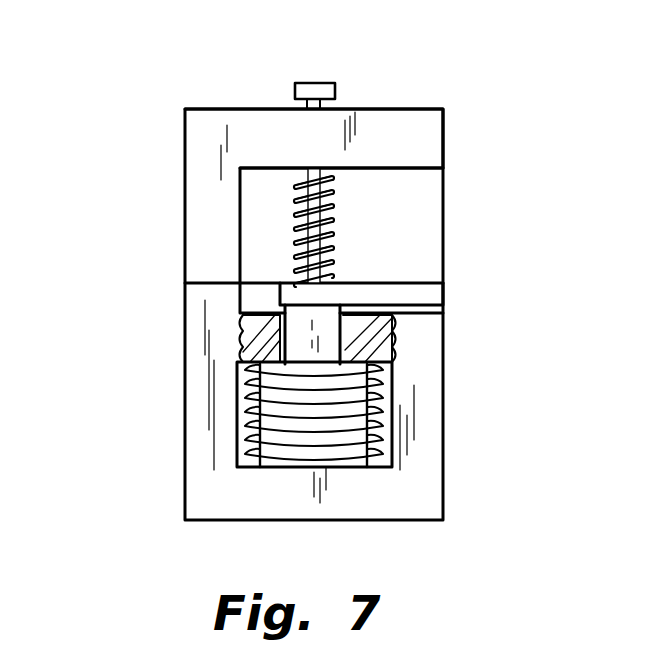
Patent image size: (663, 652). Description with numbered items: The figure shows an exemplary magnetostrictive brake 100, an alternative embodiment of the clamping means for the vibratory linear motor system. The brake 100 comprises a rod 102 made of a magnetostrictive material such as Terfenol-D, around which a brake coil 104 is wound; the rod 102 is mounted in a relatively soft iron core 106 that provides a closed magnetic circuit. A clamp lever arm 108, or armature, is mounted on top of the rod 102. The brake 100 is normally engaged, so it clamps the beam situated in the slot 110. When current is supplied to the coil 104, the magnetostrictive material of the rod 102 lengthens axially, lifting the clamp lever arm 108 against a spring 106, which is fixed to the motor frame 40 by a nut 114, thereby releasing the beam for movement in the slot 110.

The magnetostrictive brake 100 is at (164, 176).
The motor frame 40 is at (447, 141).
The nut 114 is at (337, 84).
The soft iron core 106 is at (183, 426).
The clamp lever arm 108 is at (444, 297).
The slot 110 is at (442, 312).
The brake coil 104 is at (380, 424).
The rod 102 is at (277, 452).